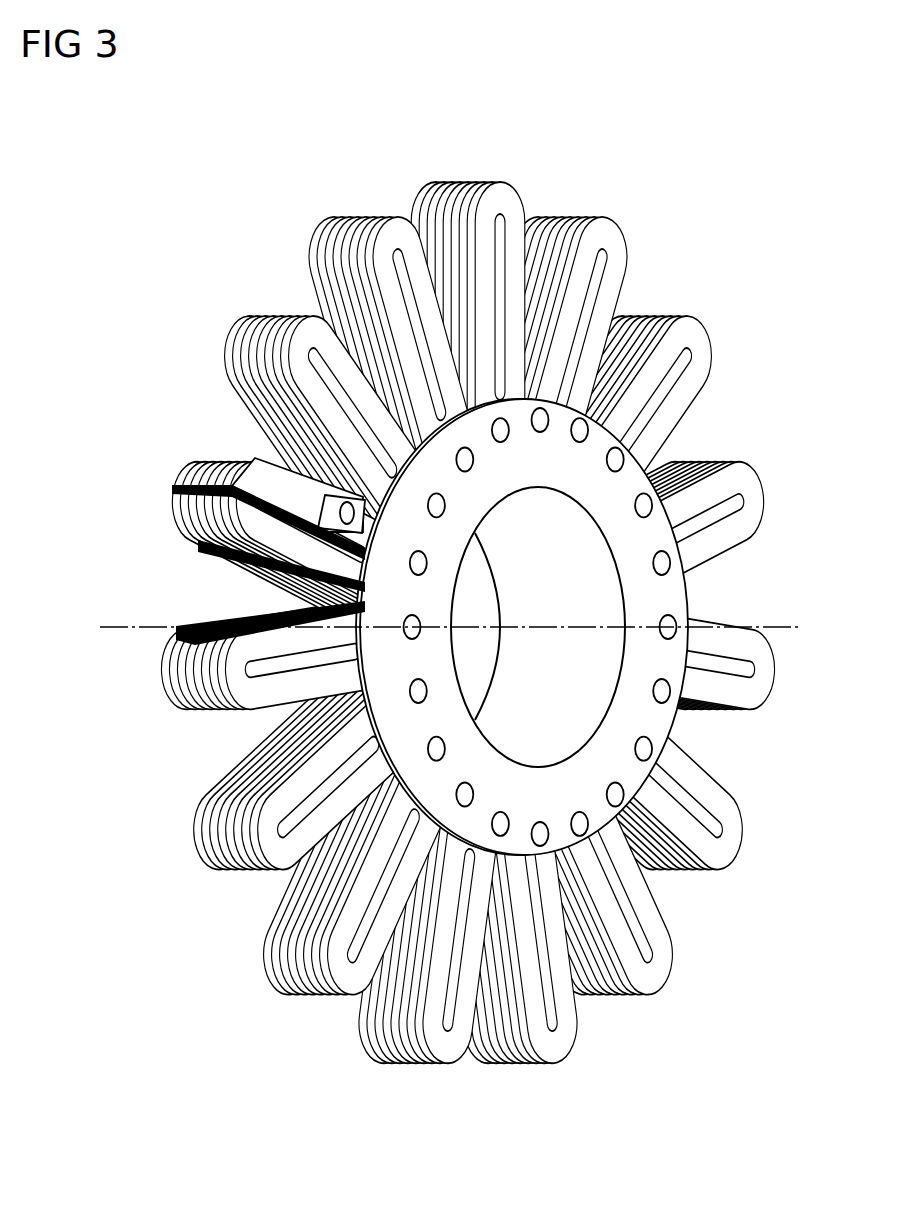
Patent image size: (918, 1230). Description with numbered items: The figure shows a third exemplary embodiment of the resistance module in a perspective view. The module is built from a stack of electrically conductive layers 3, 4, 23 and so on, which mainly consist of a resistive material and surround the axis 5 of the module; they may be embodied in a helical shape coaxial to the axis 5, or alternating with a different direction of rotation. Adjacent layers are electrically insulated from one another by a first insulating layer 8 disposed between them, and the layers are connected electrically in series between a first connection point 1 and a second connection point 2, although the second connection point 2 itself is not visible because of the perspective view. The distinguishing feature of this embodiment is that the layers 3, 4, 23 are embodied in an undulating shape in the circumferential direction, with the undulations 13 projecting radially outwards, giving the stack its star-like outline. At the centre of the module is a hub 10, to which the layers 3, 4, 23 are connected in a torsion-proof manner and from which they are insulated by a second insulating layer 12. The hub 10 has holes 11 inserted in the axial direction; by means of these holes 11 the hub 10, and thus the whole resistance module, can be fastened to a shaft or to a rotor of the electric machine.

The first connection point 1 is at (332, 513).
The second connection point 2 is at (172, 509).
The first layer 3 is at (293, 313).
The second layer 4 is at (272, 313).
The axis 5 is at (560, 626).
The first insulating layer 8 is at (268, 418).
The hub 10 is at (668, 597).
The holes 11 is at (580, 443).
The second insulating layer 12 is at (363, 663).
The undulations 13 is at (614, 235).
The layer 23 is at (262, 313).